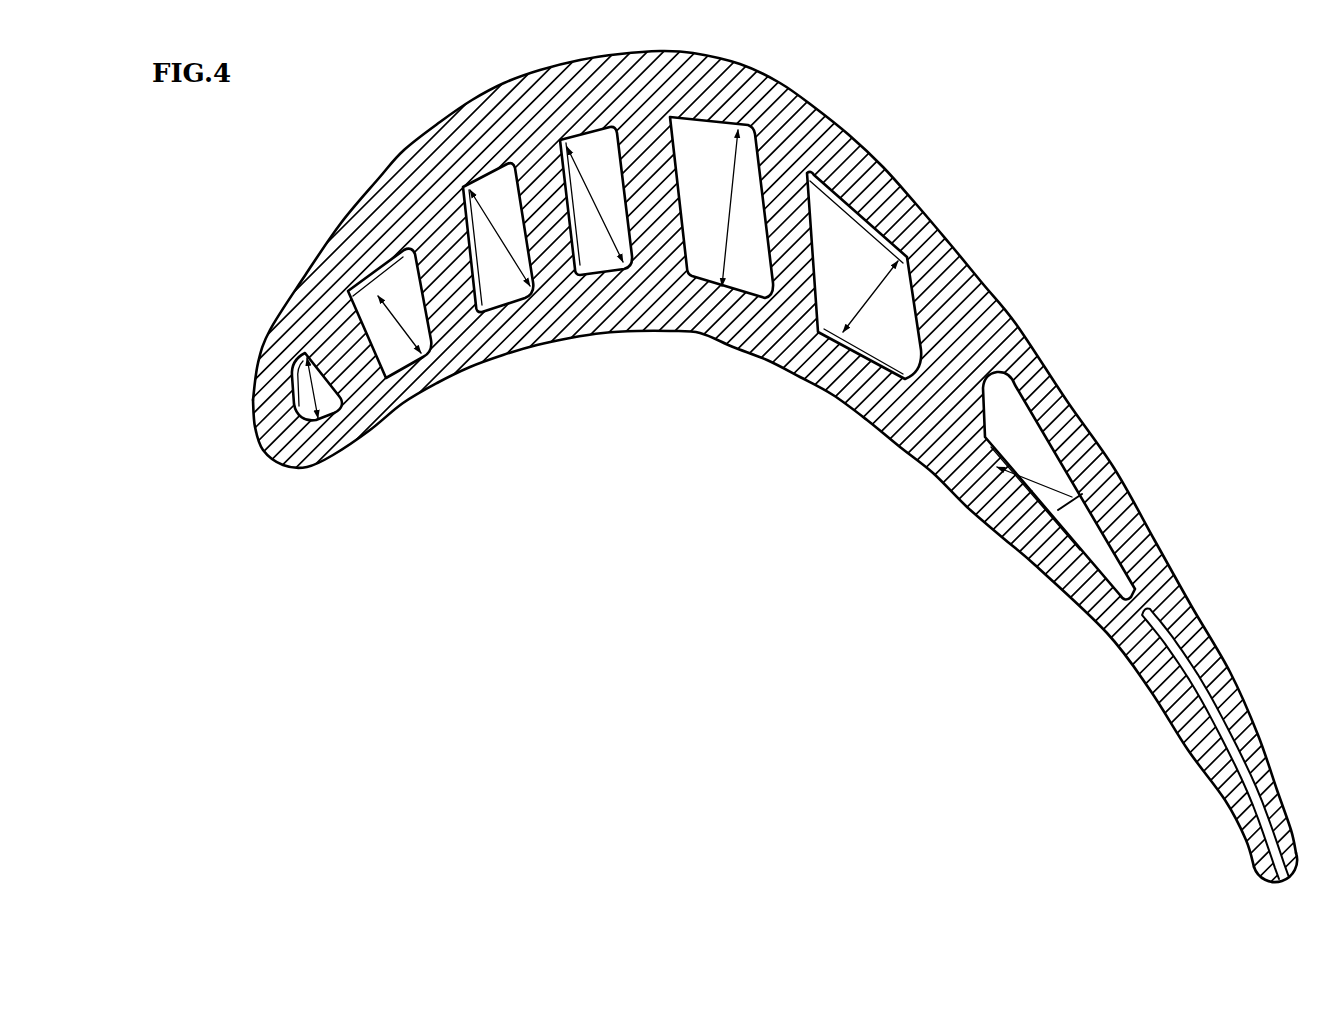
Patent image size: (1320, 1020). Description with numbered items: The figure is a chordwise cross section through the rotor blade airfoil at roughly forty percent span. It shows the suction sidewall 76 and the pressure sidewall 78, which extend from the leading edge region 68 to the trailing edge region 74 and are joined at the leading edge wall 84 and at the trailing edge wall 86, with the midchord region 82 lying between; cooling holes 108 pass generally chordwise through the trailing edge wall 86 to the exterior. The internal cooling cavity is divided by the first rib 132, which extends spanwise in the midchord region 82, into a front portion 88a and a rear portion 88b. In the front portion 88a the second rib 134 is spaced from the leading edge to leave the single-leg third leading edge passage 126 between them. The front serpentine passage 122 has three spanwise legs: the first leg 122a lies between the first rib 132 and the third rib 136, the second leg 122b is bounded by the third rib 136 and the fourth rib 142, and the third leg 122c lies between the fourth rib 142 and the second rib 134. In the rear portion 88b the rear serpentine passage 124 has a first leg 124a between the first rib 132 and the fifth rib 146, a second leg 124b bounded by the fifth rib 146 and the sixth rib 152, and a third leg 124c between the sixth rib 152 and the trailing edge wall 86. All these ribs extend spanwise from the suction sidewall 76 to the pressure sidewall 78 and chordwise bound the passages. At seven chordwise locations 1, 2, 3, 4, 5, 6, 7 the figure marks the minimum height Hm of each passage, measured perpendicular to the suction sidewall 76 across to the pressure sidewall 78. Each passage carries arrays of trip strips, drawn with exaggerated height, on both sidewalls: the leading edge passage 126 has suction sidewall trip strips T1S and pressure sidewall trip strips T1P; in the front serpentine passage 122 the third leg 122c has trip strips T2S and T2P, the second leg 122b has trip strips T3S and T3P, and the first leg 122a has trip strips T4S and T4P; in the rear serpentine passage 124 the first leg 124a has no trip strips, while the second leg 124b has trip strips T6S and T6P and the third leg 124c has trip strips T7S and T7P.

The first chordwise location 1 is at (297, 410).
The second chordwise location 2 is at (397, 298).
The third chordwise location 3 is at (498, 225).
The fourth chordwise location 4 is at (593, 178).
The fifth chordwise location 5 is at (693, 201).
The sixth chordwise location 6 is at (833, 298).
The seventh chordwise location 7 is at (1014, 448).
The leading edge region 68 is at (253, 533).
The trailing edge region 74 is at (986, 857).
The suction sidewall 76 is at (797, 110).
The pressure sidewall 78 is at (930, 435).
The midchord region 82 is at (393, 653).
The leading edge wall 84 is at (278, 447).
The trailing edge wall 86 is at (1242, 736).
The front portion of cavity 88a is at (630, 490).
The rear portion of cavity 88b is at (1136, 592).
The cooling holes 108 is at (1190, 698).
The front serpentine passage 122 is at (338, 293).
The first leg of front serpentine passage 122a is at (594, 150).
The second leg of front serpentine passage 122b is at (497, 183).
The third leg of front serpentine passage 122c is at (390, 287).
The rear serpentine passage 124 is at (760, 302).
The first leg of rear serpentine passage 124a is at (676, 159).
The second leg of rear serpentine passage 124b is at (826, 261).
The third leg of rear serpentine passage 124c is at (1007, 405).
The third leading edge passage 126 is at (291, 409).
The first rib 132 is at (634, 212).
The second rib 134 is at (323, 372).
The third rib 136 is at (525, 225).
The fourth rib 142 is at (424, 277).
The fifth rib 146 is at (769, 242).
The rib between sixth and seventh cavities 152 is at (935, 370).
The minimum height of passage Hm is at (1150, 487).
The suction side wall thickness at first cavity T1S is at (293, 357).
The pressure side wall thickness at first cavity T1P is at (333, 440).
The suction sidewall trip strips of third leg T2S is at (403, 237).
The pressure sidewall trip strips of third leg T2P is at (413, 367).
The suction sidewall trip strips of second leg T3S is at (513, 150).
The pressure sidewall trip strips of second leg T3P is at (517, 297).
The suction sidewall trip strips of first leg T4S is at (607, 122).
The pressure sidewall trip strips of first leg T4P is at (610, 290).
The suction sidewall trip strips of rear second leg T6S is at (853, 207).
The pressure sidewall trip strips of rear second leg T6P is at (863, 357).
The suction sidewall trip strips of rear third leg T7S is at (1057, 440).
The pressure sidewall trip strips of rear third leg T7P is at (1007, 513).